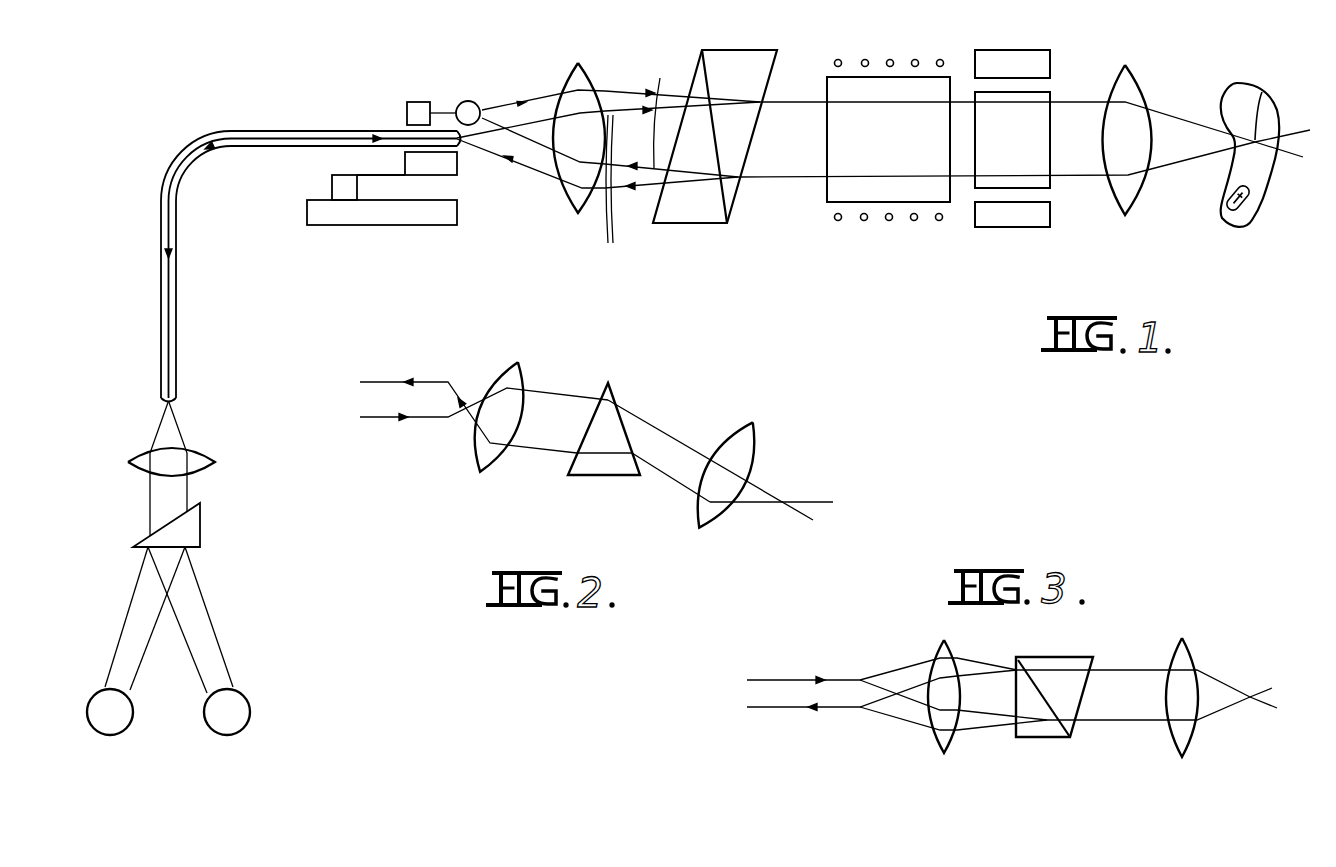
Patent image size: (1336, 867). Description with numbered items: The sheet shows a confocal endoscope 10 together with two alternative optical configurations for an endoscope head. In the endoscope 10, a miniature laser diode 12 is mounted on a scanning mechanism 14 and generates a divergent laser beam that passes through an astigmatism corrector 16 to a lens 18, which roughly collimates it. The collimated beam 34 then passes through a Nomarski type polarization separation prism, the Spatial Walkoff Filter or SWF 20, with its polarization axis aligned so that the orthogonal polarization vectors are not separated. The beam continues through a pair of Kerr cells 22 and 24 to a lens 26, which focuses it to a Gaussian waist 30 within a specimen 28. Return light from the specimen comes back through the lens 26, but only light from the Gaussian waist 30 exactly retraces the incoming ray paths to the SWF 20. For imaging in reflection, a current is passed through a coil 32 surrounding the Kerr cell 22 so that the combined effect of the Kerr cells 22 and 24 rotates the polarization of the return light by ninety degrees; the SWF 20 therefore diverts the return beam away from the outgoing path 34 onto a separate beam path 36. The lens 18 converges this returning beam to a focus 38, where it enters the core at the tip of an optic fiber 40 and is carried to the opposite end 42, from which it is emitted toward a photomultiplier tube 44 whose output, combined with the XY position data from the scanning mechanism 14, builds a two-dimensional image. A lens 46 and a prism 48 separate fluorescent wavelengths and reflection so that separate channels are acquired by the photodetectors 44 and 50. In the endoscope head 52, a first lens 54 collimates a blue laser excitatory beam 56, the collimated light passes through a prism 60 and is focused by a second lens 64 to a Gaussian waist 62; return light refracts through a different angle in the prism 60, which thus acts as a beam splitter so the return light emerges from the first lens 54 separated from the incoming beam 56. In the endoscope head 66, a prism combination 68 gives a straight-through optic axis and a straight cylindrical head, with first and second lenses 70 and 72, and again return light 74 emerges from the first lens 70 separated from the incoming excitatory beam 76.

In FIG. 1, the confocal endoscope 10 is at (210, 108).
In FIG. 1, the miniature laser diode 12 is at (412, 102).
In FIG. 1, the scanning mechanism 14 is at (395, 218).
In FIG. 1, the astigmatism corrector 16 is at (468, 101).
In FIG. 1, the lens 18 is at (563, 200).
In FIG. 1, the Spatial Walkoff Filter 20 is at (710, 225).
In FIG. 1, the Kerr cell 22 is at (826, 192).
In FIG. 1, the Kerr cell 24 is at (973, 190).
In FIG. 1, the lens 26 is at (1115, 207).
In FIG. 1, the specimen 28 is at (1217, 213).
In FIG. 1, the Gaussian waist 30 is at (1262, 93).
In FIG. 1, the coil 32 is at (914, 221).
In FIG. 1, the collimated beam 34 is at (662, 92).
In FIG. 1, the beam path 36 is at (609, 194).
In FIG. 1, the focus 38 is at (460, 141).
In FIG. 1, the optic fiber 40 is at (178, 228).
In FIG. 1, the opposite end 42 is at (177, 400).
In FIG. 1, the photomultiplier tube 44 is at (110, 725).
In FIG. 1, the lens 46 is at (215, 462).
In FIG. 1, the prism 48 is at (200, 535).
In FIG. 1, the photodetector 50 is at (222, 722).
In FIG. 2, the endoscope head 52 is at (535, 492).
In FIG. 2, the first lens 54 is at (523, 370).
In FIG. 2, the blue laser excitatory beam 56 is at (420, 418).
In FIG. 2, the prism 60 is at (610, 390).
In FIG. 2, the Gaussian waist 62 is at (800, 500).
In FIG. 2, the second lens 64 is at (755, 420).
In FIG. 3, the endoscope head 66 is at (1165, 625).
In FIG. 3, the prism combination 68 is at (1065, 738).
In FIG. 3, the first lens 70 is at (944, 753).
In FIG. 3, the second lens 72 is at (1182, 757).
In FIG. 3, the return light 74 is at (795, 710).
In FIG. 3, the incoming excitatory beam 76 is at (780, 682).